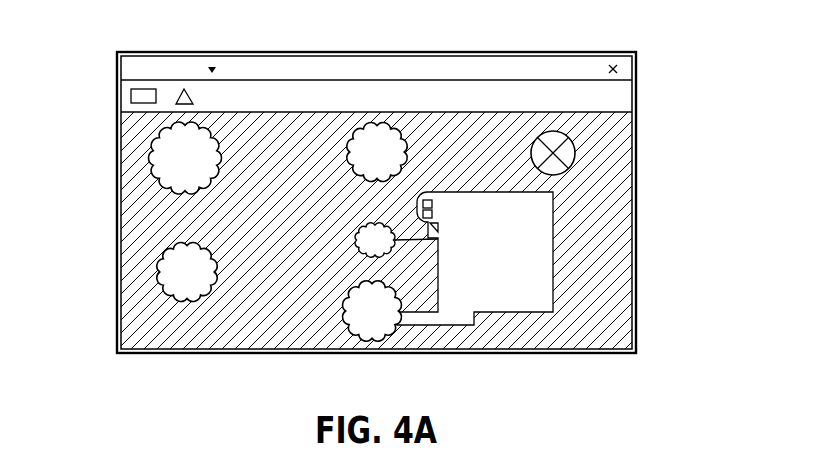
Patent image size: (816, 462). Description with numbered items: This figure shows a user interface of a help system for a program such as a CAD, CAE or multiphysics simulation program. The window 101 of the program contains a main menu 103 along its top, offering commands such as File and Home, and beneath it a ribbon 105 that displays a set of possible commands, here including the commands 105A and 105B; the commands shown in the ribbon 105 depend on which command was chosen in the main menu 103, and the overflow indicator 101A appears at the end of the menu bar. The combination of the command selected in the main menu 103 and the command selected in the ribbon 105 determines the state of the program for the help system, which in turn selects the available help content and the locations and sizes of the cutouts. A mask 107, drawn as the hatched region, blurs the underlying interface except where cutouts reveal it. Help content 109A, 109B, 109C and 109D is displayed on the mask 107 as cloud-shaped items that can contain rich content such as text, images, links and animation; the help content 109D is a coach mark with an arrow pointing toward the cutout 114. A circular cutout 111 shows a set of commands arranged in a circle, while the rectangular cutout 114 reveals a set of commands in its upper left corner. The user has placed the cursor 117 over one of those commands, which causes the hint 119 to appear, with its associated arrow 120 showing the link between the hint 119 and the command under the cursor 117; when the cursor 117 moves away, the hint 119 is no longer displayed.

The window 101 is at (339, 50).
The menu overflow indicator 101A is at (213, 65).
The main menu 103 is at (558, 70).
The ribbon 105 is at (455, 92).
The command 105A is at (262, 78).
The command 105B is at (270, 97).
The mask 107 is at (618, 320).
The help content 109A is at (150, 152).
The help content 109B is at (157, 268).
The help content 109C is at (378, 122).
The help content 109D is at (370, 341).
The cutout 111 is at (568, 152).
The cutout 114 is at (508, 312).
The cursor 117 is at (476, 222).
The hint 119 is at (390, 252).
The arrow 120 is at (439, 230).